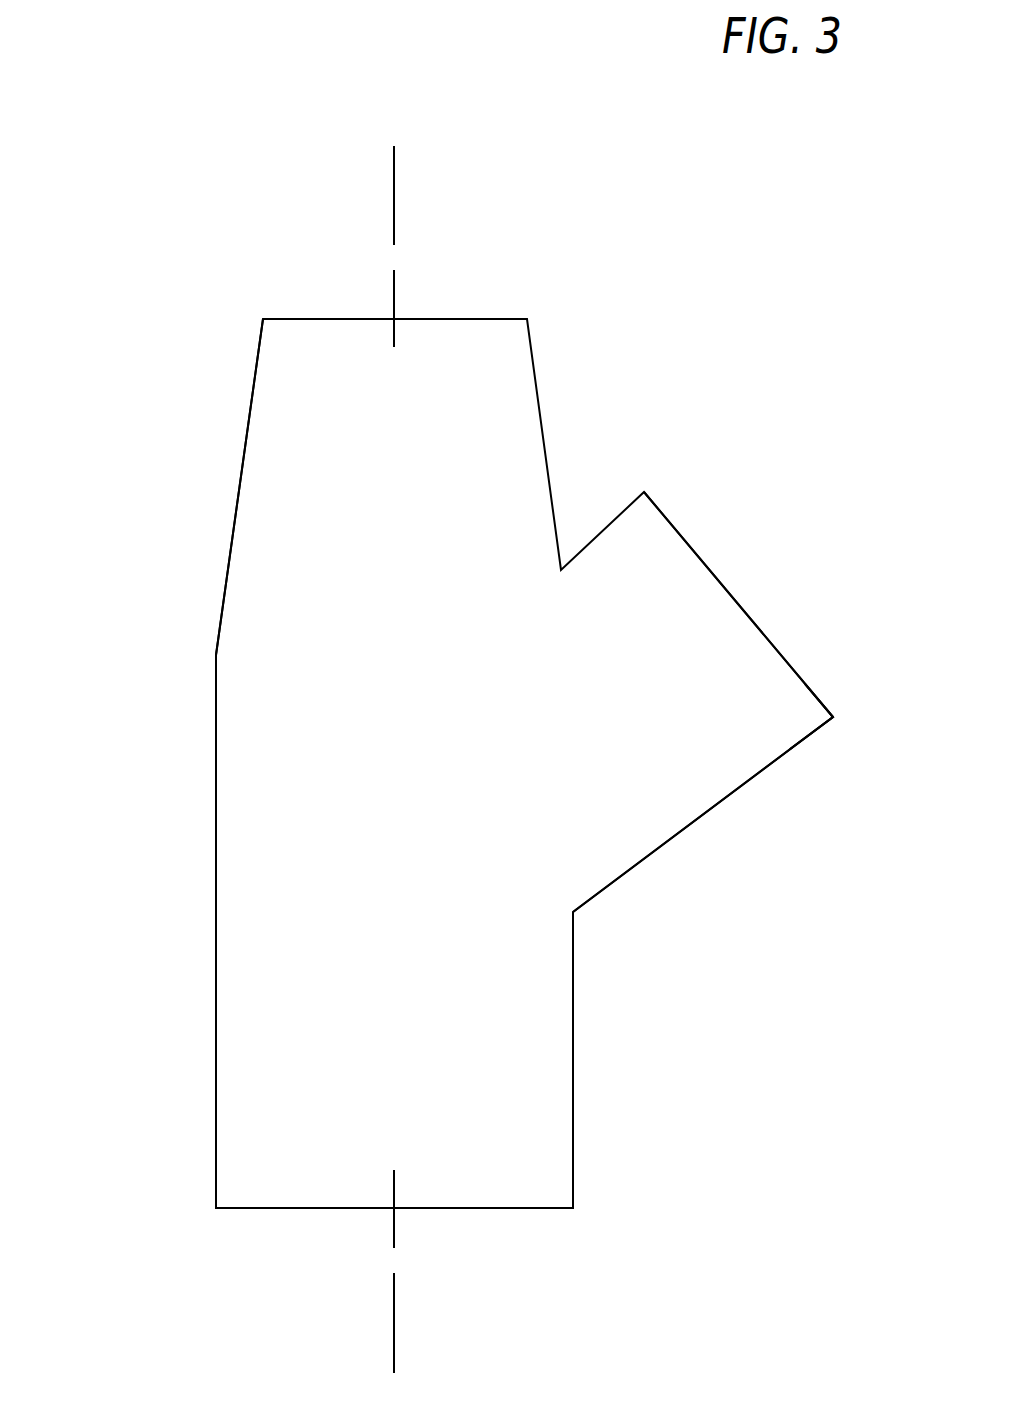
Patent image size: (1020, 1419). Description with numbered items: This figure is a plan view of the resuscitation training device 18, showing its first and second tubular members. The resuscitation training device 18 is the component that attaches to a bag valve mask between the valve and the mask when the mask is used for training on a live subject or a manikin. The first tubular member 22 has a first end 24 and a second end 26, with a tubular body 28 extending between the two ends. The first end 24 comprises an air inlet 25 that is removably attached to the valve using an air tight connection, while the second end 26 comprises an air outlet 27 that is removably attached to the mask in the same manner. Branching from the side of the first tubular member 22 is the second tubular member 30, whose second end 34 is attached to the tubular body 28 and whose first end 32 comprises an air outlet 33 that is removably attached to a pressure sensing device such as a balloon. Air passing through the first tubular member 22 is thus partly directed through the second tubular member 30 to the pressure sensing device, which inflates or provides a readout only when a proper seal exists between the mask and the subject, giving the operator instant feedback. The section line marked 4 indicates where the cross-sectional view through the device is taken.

The resuscitation training device 18 is at (187, 659).
The first tubular member 22 is at (235, 507).
The first end 24 is at (273, 318).
The air inlet 25 is at (430, 318).
The second end 26 is at (248, 1208).
The air outlet 27 is at (478, 1208).
The tubular body 28 is at (216, 928).
The second tubular member 30 is at (758, 775).
The first end 32 is at (820, 697).
The air outlet 33 is at (735, 597).
The second end 34 is at (573, 912).
The section line 4- 4 is at (530, 1373).